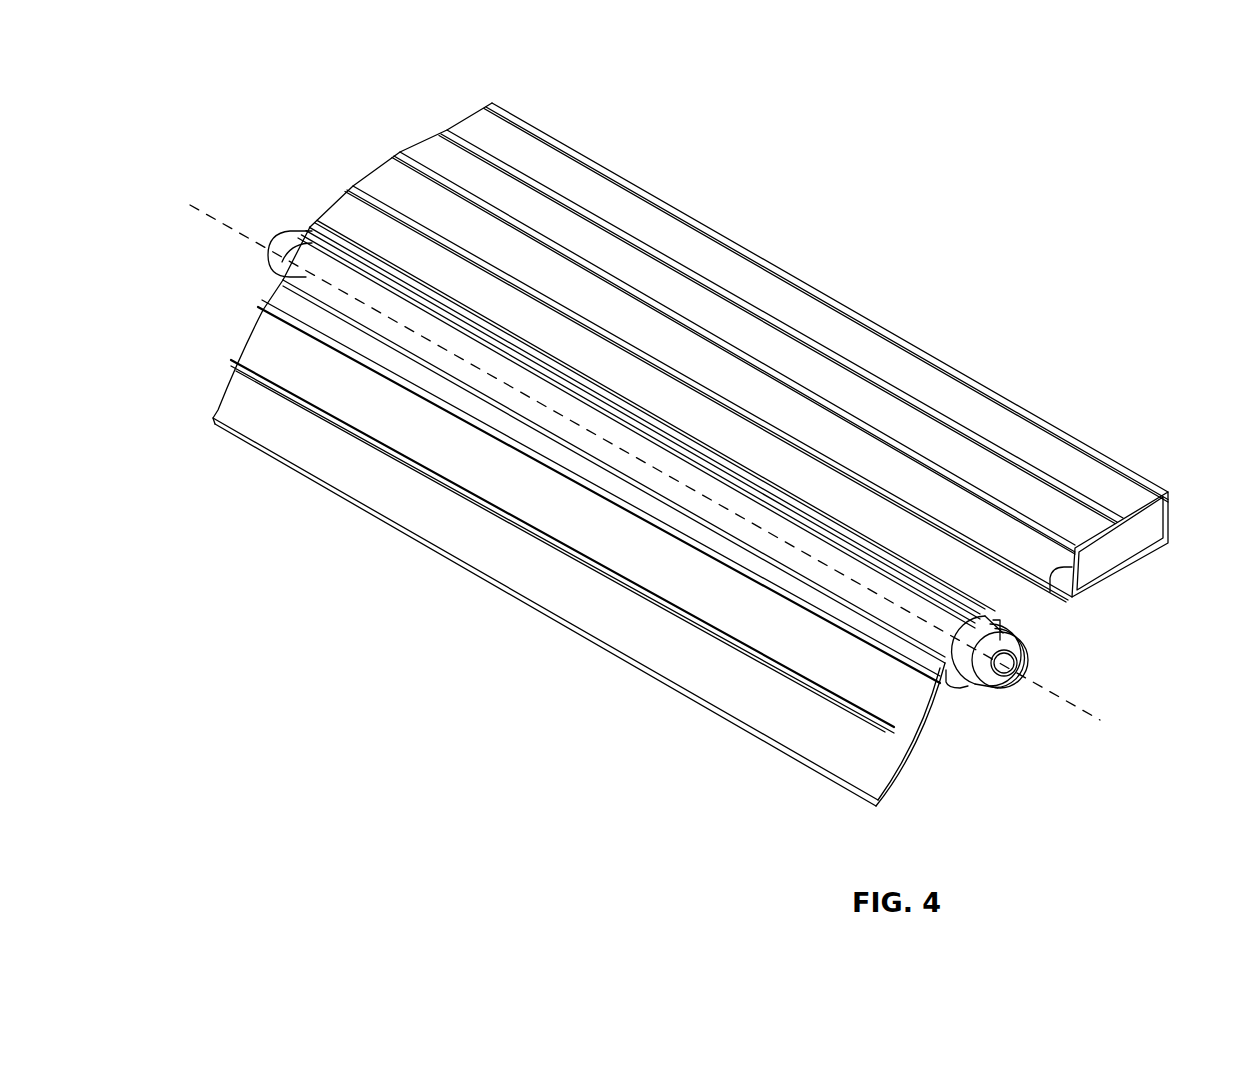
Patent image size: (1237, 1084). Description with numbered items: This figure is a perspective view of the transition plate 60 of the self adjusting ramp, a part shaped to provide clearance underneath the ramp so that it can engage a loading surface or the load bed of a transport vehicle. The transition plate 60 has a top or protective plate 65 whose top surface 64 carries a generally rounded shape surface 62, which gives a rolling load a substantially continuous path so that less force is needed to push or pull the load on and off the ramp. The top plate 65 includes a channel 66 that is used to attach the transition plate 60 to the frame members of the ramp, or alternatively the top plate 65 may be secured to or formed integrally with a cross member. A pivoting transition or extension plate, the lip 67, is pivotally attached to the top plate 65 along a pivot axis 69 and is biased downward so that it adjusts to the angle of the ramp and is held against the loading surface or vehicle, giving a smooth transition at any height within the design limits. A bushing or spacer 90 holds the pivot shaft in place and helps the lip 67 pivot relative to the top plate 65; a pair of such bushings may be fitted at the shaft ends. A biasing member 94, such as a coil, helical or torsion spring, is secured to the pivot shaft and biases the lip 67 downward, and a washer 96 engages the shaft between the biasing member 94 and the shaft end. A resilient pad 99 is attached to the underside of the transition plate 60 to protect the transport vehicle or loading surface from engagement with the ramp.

The transition plate 60 is at (849, 219).
The generally rounded shape surface 62 is at (333, 265).
The top surface 64 is at (960, 570).
The top plate 65 is at (657, 223).
The channel 66 is at (1143, 543).
The lip 67 is at (416, 513).
The pivot axis 69 is at (1077, 716).
The bushing 90 is at (270, 262).
The biasing member 94 is at (1010, 638).
The washer 96 is at (990, 683).
The pad 99 is at (962, 687).